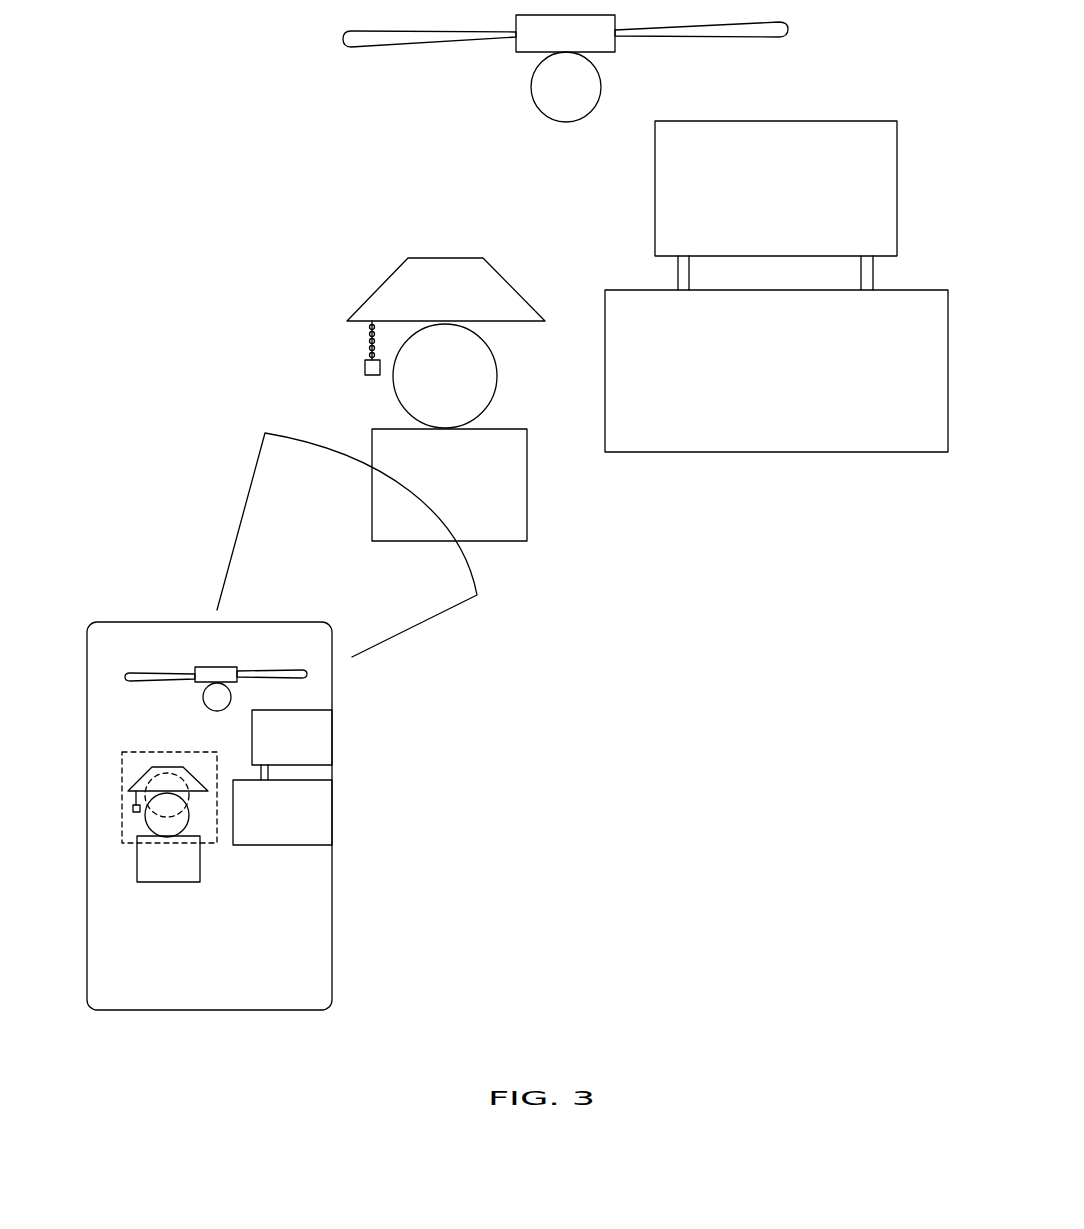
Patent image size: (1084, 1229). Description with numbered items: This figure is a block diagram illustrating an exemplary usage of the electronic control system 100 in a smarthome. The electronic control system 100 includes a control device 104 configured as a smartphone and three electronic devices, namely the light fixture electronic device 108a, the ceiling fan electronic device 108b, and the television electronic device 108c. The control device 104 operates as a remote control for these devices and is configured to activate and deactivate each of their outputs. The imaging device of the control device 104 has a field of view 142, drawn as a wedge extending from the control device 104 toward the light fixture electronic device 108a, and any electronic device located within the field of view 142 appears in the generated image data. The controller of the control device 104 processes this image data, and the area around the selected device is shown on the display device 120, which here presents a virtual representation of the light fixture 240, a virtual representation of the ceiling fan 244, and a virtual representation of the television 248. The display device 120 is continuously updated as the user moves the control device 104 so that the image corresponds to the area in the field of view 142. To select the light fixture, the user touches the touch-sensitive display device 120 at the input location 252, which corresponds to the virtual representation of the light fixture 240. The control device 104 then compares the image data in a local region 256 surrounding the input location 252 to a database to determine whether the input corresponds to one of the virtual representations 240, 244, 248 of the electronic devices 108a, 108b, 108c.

The electronic control system 100 is at (150, 226).
The control device 104 is at (277, 790).
The light fixture electronic device 108a is at (424, 258).
The ceiling fan electronic device 108b is at (427, 45).
The television electronic device 108c is at (820, 120).
The display device 120 is at (290, 958).
The field of view 142 is at (238, 530).
The virtual representation of the light fixture 240 is at (193, 777).
The virtual representation of the ceiling fan 244 is at (143, 673).
The virtual representation of the television 248 is at (423, 815).
The input location 252 is at (128, 750).
The local region 256 is at (140, 782).